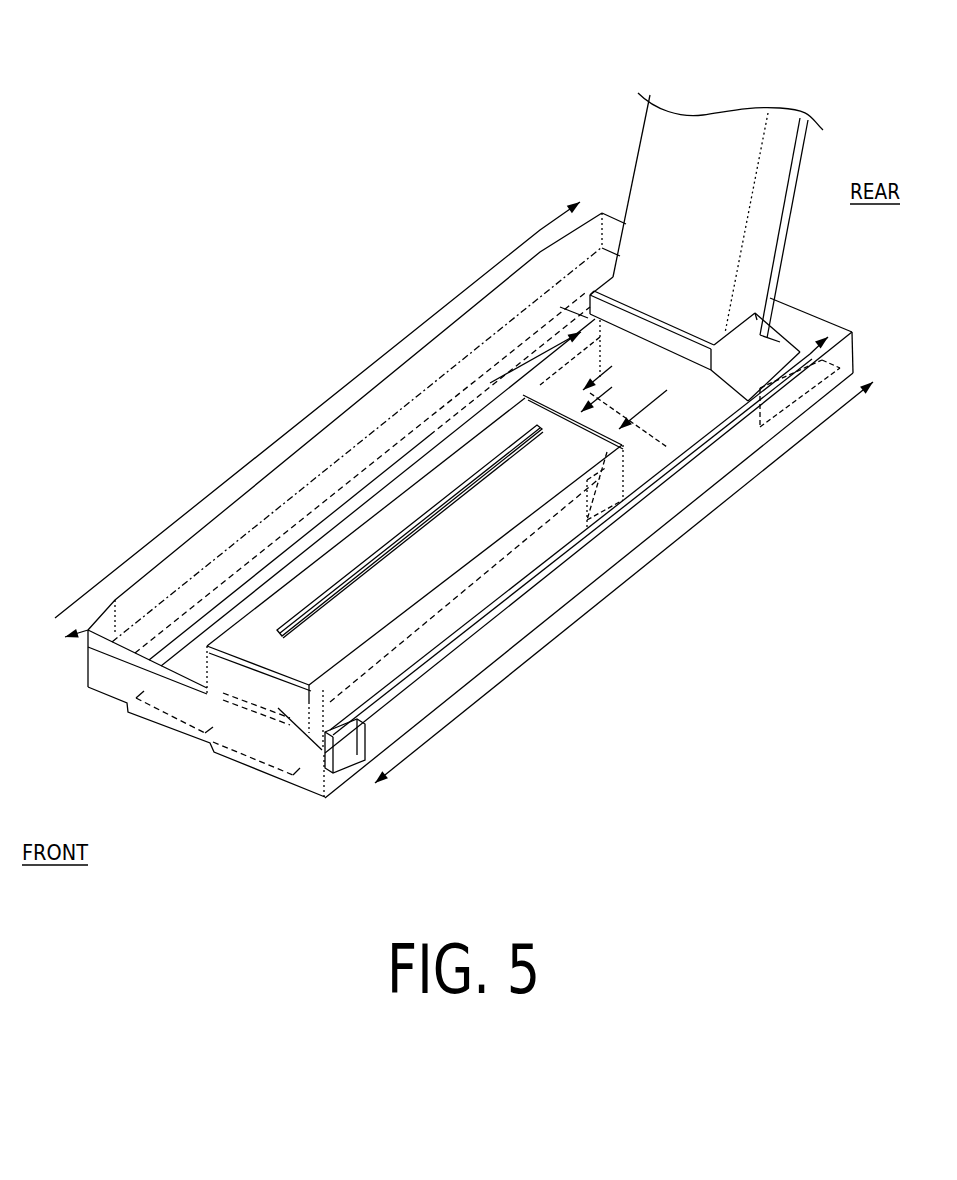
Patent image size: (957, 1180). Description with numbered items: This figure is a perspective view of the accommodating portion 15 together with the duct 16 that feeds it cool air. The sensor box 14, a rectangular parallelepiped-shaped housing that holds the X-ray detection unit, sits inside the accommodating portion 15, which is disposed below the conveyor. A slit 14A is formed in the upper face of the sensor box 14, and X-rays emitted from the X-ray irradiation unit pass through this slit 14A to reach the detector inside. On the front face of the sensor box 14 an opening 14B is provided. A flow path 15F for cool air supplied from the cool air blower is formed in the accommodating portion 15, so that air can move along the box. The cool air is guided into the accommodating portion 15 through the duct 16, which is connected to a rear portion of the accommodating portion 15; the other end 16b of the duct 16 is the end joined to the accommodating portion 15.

The sensor box 14 is at (240, 643).
The slit 14A is at (397, 532).
The opening 14B is at (250, 705).
The accommodating portion 15 is at (547, 276).
The flow path 15F is at (582, 365).
The duct 16 is at (707, 133).
The other end of the duct 16b is at (707, 390).